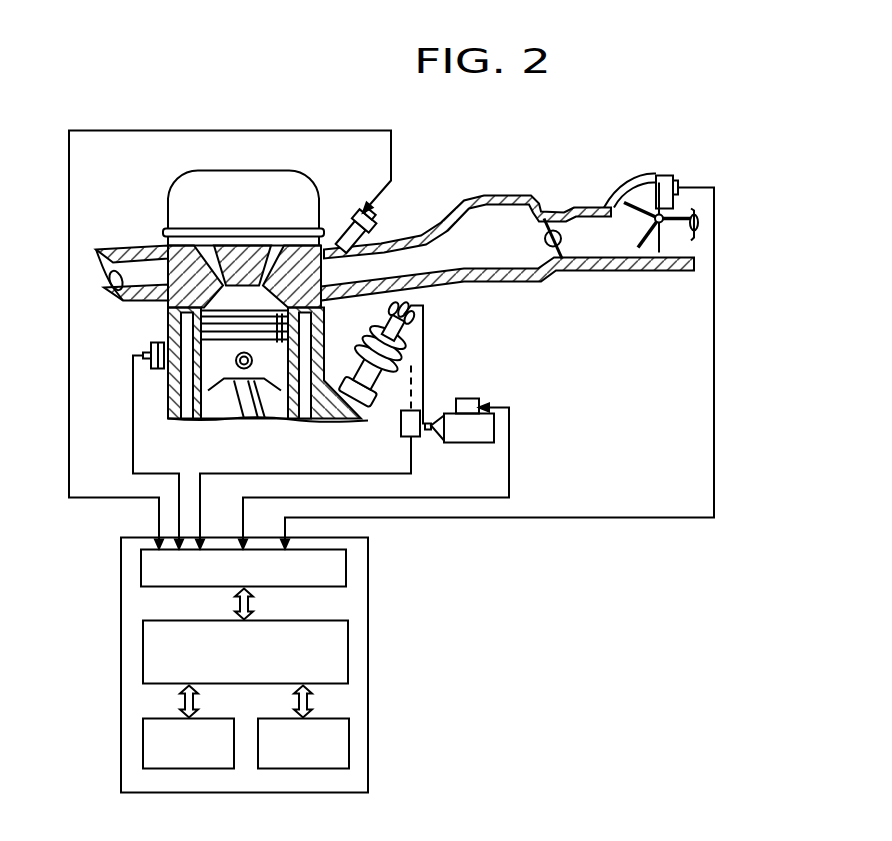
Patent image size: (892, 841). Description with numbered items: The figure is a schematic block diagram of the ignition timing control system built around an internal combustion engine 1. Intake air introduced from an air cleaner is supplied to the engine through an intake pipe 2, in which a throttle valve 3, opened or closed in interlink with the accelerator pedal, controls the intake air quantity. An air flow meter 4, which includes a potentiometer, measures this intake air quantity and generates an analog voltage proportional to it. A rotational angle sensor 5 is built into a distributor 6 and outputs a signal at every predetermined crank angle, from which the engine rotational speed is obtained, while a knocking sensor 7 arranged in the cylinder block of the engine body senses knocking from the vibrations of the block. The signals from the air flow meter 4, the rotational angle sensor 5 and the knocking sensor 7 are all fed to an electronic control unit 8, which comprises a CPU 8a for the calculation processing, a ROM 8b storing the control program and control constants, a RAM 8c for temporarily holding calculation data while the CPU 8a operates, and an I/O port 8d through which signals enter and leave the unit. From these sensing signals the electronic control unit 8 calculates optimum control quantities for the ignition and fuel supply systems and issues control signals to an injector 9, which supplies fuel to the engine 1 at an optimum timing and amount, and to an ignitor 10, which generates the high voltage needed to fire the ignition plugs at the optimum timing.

The internal combustion engine 1 is at (167, 210).
The intake pipe 2 is at (440, 247).
The throttle valve 3 is at (560, 232).
The air flow meter 4 is at (672, 172).
The rotational angle sensor 5 is at (398, 430).
The distributor 6 is at (427, 359).
The knocking sensor 7 is at (150, 345).
The electronic control unit 8 is at (240, 665).
The CPU 8a is at (347, 648).
The ROM 8b is at (142, 742).
The RAM 8c is at (348, 742).
The I/O port 8d is at (347, 573).
The injector 9 is at (370, 228).
The ignitor 10 is at (470, 440).